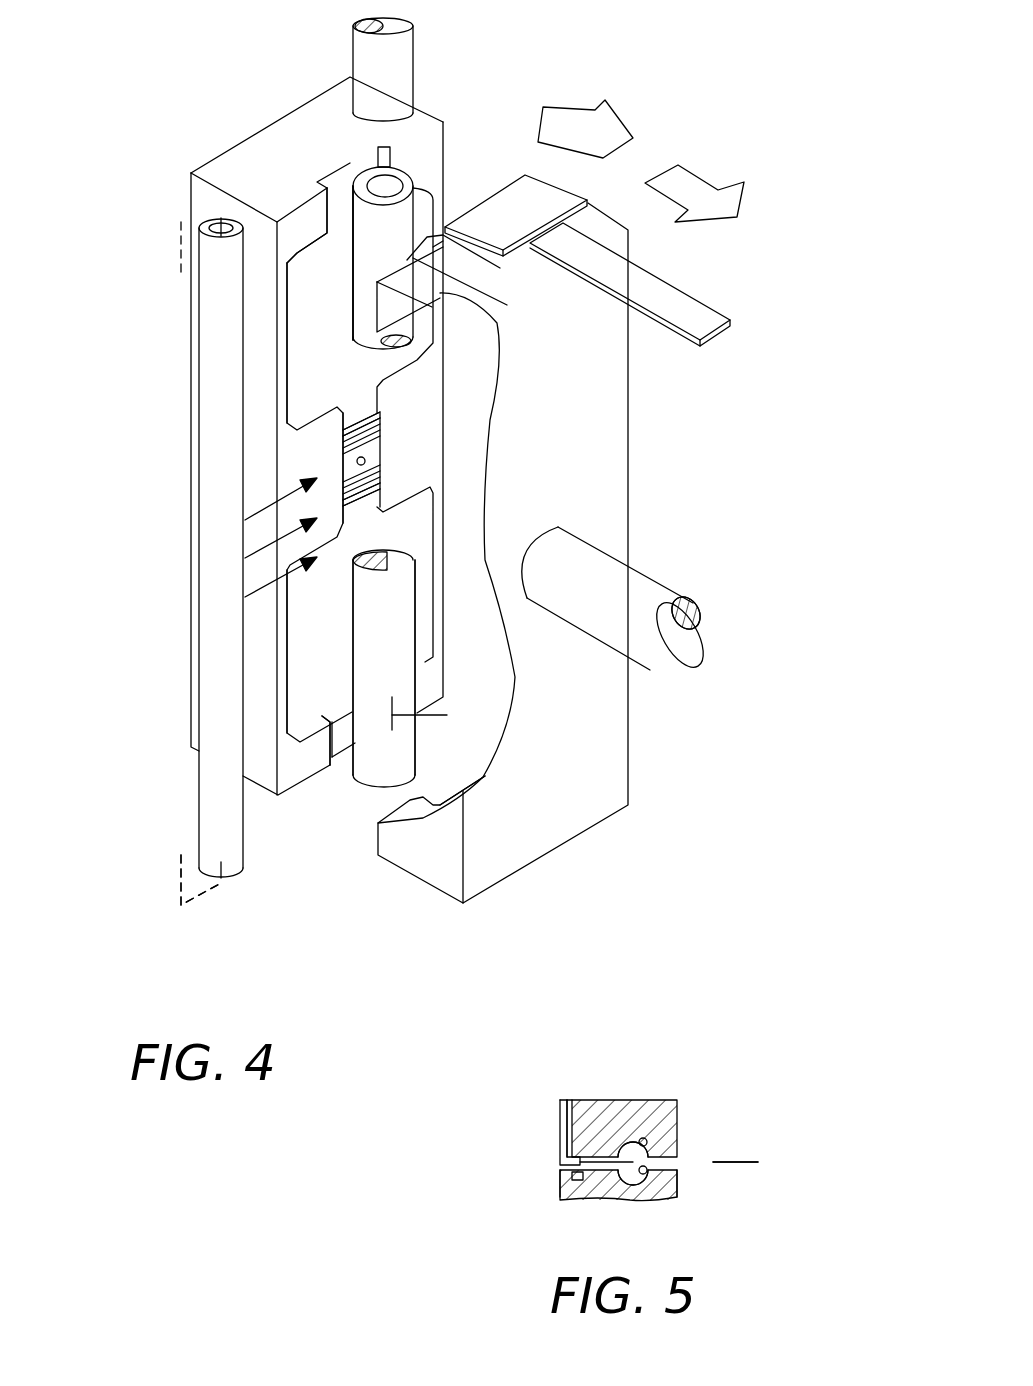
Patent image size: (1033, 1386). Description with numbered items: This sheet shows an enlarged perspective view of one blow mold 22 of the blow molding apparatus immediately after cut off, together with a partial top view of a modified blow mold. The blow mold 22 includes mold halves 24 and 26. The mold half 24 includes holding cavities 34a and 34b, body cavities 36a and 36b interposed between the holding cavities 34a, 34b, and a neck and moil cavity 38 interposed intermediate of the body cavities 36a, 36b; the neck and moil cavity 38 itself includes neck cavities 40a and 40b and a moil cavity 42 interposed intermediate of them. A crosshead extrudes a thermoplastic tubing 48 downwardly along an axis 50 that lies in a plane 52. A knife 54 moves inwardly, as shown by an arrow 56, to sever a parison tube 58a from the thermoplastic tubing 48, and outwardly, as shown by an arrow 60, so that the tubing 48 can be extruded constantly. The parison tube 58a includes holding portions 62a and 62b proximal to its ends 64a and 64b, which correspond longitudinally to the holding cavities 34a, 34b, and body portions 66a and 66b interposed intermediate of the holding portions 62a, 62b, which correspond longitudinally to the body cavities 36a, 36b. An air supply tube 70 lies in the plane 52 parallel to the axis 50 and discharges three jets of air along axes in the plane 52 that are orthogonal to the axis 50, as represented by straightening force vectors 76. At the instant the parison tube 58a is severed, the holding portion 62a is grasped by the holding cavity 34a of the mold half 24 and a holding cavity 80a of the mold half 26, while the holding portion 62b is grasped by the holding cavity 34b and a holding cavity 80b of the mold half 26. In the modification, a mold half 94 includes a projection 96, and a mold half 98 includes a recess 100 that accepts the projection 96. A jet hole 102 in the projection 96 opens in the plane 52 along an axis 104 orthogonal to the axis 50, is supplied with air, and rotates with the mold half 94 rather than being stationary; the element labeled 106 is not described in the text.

In FIG. 4, the mold half 24 is at (253, 85).
In FIG. 4, the end 64a is at (358, 182).
In FIG. 4, the thermoplastic tubing 48 is at (413, 53).
In FIG. 4, the parison tube 58a is at (445, 145).
In FIG. 4, the arrow 56 is at (610, 127).
In FIG. 4, the holding portion 62a is at (377, 220).
In FIG. 4, the holding cavity 34a is at (338, 183).
In FIG. 4, the knife 54 is at (480, 200).
In FIG. 4, the arrow 60 is at (705, 180).
In FIG. 4, the holding cavity 80a is at (413, 267).
In FIG. 4, the body cavity 36a is at (317, 343).
In FIG. 4, the body portion 66a is at (377, 290).
In FIG. 4, the neck and moil cavity 38 is at (380, 427).
In FIG. 5, the neck and moil cavity 38 is at (643, 1137).
In FIG. 4, the neck cavity 40a is at (380, 437).
In FIG. 4, the moil cavity 42 is at (383, 452).
In FIG. 4, the neck cavity 40b is at (380, 473).
In FIG. 4, the straightening force vectors 76 is at (268, 507).
In FIG. 4, the blow mold 22 is at (733, 561).
In FIG. 4, the mold half 26 is at (748, 606).
In FIG. 4, the body cavity 36b is at (319, 651).
In FIG. 4, the body portion 66b is at (390, 670).
In FIG. 4, the axis 50 is at (447, 715).
In FIG. 5, the axis 50 is at (650, 1160).
In FIG. 4, the holding cavity 80b is at (452, 775).
In FIG. 5, the holding cavity 80b is at (647, 1200).
In FIG. 4, the holding cavity 34b is at (342, 733).
In FIG. 5, the holding cavity 34b is at (627, 1137).
In FIG. 4, the air supply tube 70 is at (248, 860).
In FIG. 4, the plane 52 is at (185, 905).
In FIG. 5, the plane 52 is at (758, 1163).
In FIG. 4, the end 64b is at (388, 760).
In FIG. 4, the holding portion 62b is at (390, 760).
In FIG. 5, the upper block 106 is at (560, 1100).
In FIG. 5, the mold half 94 is at (607, 1097).
In FIG. 5, the projection 96 is at (560, 1130).
In FIG. 5, the axis 104 is at (757, 1163).
In FIG. 5, the jet hole 102 is at (567, 1175).
In FIG. 5, the recess 100 is at (567, 1183).
In FIG. 5, the mold half 98 is at (563, 1197).